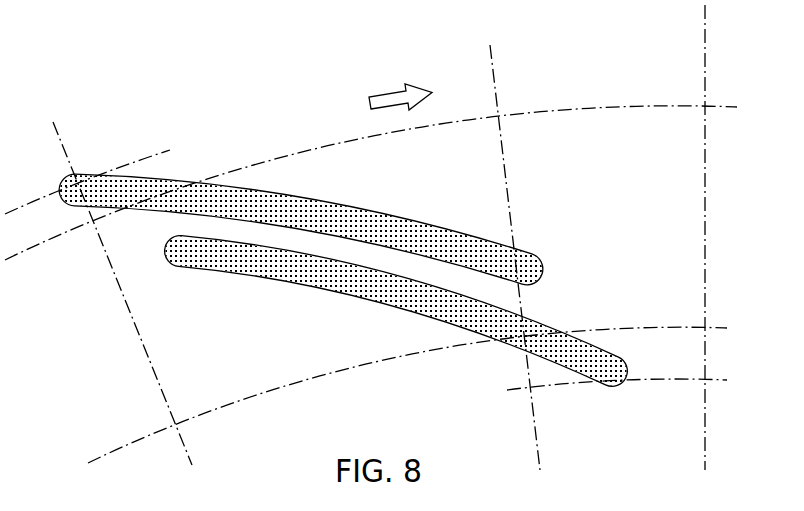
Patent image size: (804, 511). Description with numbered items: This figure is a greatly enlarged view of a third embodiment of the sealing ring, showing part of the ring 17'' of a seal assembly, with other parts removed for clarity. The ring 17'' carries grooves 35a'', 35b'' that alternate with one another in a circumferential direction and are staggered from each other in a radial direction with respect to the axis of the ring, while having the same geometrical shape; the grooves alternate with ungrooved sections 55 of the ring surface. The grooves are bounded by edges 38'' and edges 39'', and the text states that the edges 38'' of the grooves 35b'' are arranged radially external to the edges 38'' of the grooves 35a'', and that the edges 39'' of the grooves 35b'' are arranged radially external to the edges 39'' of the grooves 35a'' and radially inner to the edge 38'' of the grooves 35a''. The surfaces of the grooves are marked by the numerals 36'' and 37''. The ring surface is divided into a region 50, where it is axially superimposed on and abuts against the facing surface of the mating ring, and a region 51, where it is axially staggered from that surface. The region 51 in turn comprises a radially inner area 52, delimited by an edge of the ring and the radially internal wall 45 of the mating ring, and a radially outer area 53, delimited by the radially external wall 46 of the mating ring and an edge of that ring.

The groove 35a'' is at (396, 315).
The groove 35b'' is at (301, 174).
The lower surface 36'' is at (347, 294).
The upper surface 37'' is at (473, 217).
The edge of groove 38'' is at (122, 277).
The edge of groove 39'' is at (571, 257).
The radially internal wall 45 is at (718, 338).
The radially external wall 46 is at (684, 100).
The region 50 is at (608, 153).
The region 51 is at (533, 79).
The radially inner area 52 is at (666, 355).
The radially outer area 53 is at (556, 101).
The ungrooved section 55 is at (370, 255).
The ring 17'' is at (719, 237).